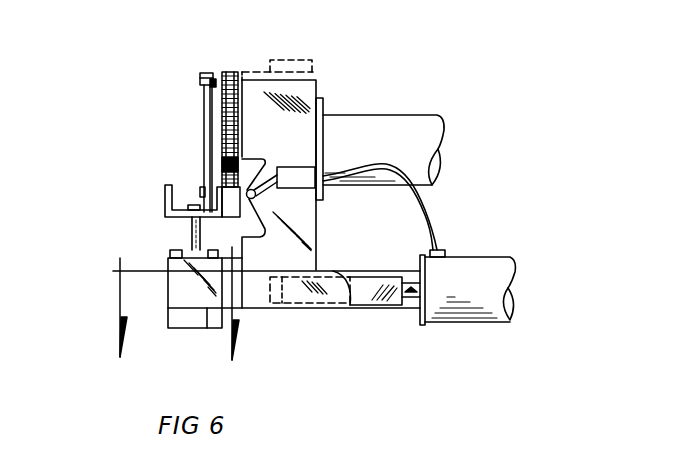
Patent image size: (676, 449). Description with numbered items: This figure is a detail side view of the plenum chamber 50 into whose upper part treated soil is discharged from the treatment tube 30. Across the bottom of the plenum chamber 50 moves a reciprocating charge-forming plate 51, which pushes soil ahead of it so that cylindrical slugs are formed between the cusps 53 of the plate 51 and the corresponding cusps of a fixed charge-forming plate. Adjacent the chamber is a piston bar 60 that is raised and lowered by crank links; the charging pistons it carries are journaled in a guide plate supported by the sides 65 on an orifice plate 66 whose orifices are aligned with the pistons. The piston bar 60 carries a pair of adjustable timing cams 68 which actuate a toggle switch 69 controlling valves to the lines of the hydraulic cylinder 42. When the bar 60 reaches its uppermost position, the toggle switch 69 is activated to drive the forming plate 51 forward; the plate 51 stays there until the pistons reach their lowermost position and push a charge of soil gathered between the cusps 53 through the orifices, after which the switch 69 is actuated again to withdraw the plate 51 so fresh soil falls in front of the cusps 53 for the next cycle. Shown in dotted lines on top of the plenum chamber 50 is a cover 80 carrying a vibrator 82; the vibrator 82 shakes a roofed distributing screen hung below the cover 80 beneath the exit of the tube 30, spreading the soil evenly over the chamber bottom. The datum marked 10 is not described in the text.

The reference plane / direction 10 is at (175, 317).
The tube 30 is at (398, 122).
The hydraulic cylinder 42 is at (489, 264).
The plenum chamber 50 is at (318, 92).
The charge-forming plate 51 is at (373, 298).
The cusps 53 is at (267, 295).
The piston bar 60 is at (167, 196).
The sides 65 is at (197, 298).
The orifice plate 66 is at (193, 322).
The adjustable timing cams 68 is at (252, 232).
The toggle switch 69 is at (298, 180).
The cover 80 is at (245, 73).
The vibrator 82 is at (284, 61).